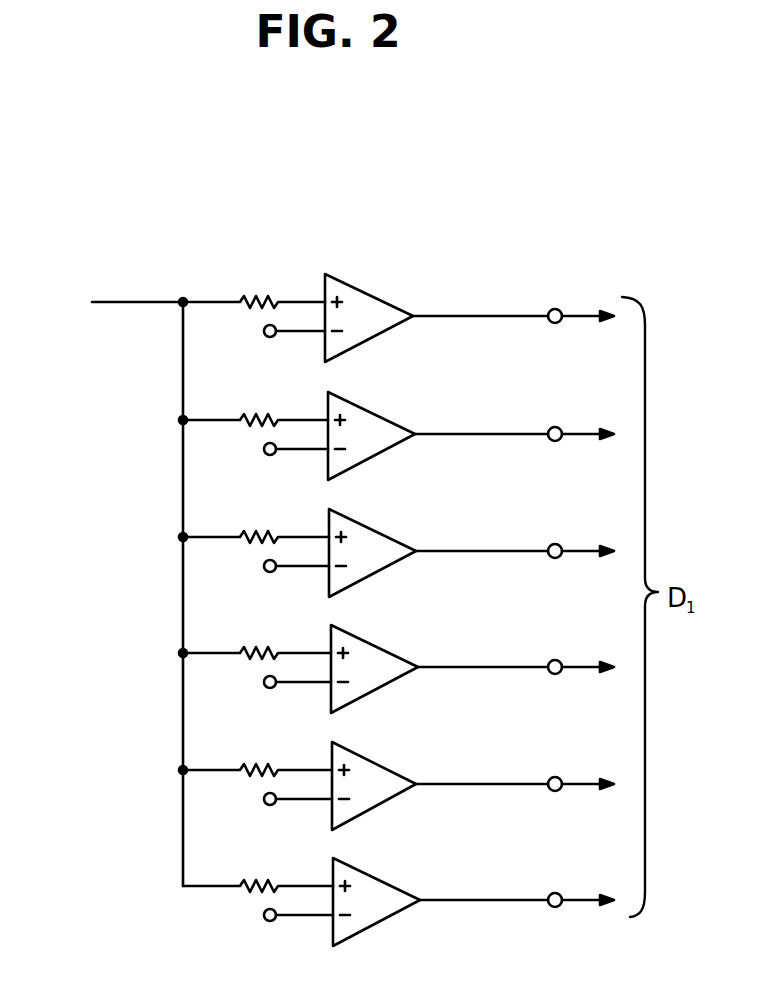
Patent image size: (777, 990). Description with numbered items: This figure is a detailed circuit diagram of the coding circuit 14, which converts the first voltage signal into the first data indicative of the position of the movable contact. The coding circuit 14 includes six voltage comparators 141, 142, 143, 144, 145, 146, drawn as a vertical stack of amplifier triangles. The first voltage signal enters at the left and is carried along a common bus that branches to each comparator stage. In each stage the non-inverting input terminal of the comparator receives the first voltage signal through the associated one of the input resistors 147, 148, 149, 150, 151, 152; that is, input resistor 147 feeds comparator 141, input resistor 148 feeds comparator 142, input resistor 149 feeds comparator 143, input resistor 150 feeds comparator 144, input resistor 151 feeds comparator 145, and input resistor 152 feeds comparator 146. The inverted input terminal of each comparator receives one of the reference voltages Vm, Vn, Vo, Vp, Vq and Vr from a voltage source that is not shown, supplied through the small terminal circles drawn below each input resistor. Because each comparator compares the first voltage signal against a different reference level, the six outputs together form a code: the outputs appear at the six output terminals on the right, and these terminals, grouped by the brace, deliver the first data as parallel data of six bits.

The coding circuit 14 is at (504, 236).
The voltage comparator 141 is at (370, 300).
The voltage comparator 142 is at (385, 418).
The voltage comparator 143 is at (380, 535).
The voltage comparator 144 is at (383, 651).
The voltage comparator 145 is at (372, 768).
The voltage comparator 146 is at (388, 884).
The input resistor 147 is at (266, 299).
The input resistor 148 is at (249, 417).
The input resistor 149 is at (239, 534).
The input resistor 150 is at (236, 650).
The input resistor 151 is at (244, 765).
The input resistor 152 is at (256, 880).